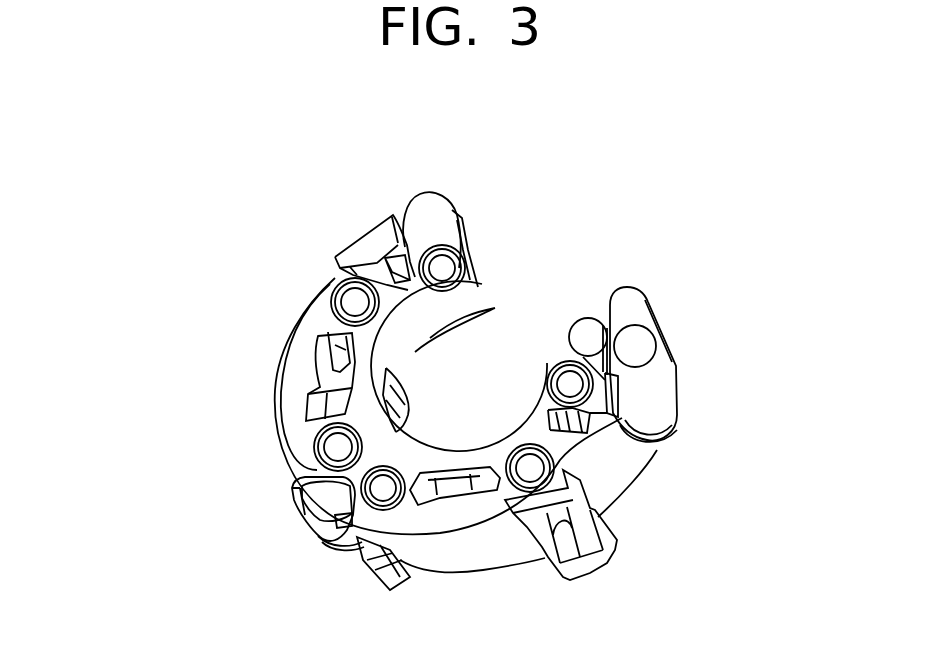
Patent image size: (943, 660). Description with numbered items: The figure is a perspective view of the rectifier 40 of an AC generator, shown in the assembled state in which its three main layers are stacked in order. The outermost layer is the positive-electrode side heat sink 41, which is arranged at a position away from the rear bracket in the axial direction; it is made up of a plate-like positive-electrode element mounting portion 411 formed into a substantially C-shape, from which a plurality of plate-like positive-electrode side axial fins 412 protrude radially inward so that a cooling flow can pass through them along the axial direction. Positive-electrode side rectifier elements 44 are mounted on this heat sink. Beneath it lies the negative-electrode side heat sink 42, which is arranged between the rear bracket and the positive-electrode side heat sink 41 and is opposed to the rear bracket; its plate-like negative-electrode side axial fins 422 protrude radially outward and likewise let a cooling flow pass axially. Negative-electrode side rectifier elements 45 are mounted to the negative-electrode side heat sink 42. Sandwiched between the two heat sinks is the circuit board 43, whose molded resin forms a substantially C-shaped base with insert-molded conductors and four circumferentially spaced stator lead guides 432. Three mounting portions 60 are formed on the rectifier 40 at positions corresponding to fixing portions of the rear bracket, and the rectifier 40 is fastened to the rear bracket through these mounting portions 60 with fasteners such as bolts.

The rectifier 40 is at (625, 227).
The positive-electrode side heat sink 41 is at (435, 240).
The positive-electrode element mounting portion 411 is at (370, 455).
The positive-electrode side axial fins 412 is at (410, 337).
The negative-electrode side heat sink 42 is at (285, 378).
The negative-electrode side axial fins 422 is at (452, 548).
The circuit board 43 is at (367, 577).
The stator lead guides 432 is at (587, 550).
The positive-electrode side rectifier elements 44 is at (352, 302).
The negative-electrode side rectifier elements 45 is at (325, 385).
The mounting portions 60 is at (420, 200).